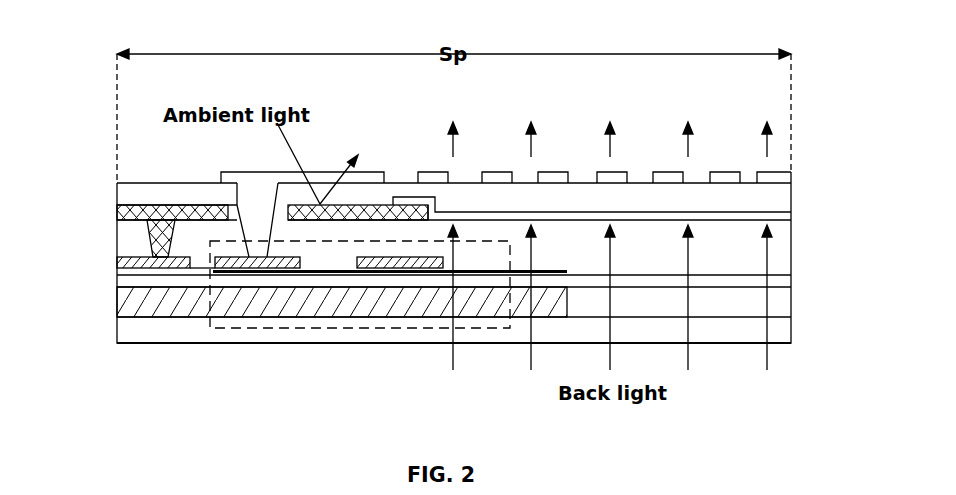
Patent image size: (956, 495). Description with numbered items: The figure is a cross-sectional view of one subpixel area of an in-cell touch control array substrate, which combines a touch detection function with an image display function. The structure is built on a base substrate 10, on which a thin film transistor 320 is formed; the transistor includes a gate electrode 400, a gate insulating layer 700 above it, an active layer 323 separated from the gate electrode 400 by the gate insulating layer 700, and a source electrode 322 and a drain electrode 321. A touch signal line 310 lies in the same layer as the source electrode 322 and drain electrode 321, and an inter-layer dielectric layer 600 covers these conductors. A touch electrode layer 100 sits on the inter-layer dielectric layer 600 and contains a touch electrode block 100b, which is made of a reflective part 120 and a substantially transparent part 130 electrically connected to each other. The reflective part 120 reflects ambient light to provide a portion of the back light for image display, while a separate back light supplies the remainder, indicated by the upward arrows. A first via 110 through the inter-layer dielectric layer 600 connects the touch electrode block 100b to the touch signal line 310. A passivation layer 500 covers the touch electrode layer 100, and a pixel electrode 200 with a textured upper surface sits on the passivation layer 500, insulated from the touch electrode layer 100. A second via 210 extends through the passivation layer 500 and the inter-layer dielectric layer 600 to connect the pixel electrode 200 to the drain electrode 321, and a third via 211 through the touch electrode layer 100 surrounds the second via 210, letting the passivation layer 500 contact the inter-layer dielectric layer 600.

The base substrate 10 is at (777, 336).
The touch electrode layer 100 is at (778, 217).
The touch electrode blocks 100b is at (425, 101).
The first vias 110 is at (157, 234).
The reflective part 120 is at (317, 203).
The substantially transparent part 130 is at (470, 213).
The pixel electrode 200 is at (778, 177).
The second vias 210 is at (248, 205).
The third via 211 is at (282, 212).
The touch signal lines 310 is at (122, 266).
The thin film transistors 320 is at (510, 260).
The drain electrode 321 is at (258, 262).
The source electrode 322 is at (410, 268).
The active layer 323 is at (305, 273).
The gate electrode 400 is at (342, 302).
The passivation layer 500 is at (778, 197).
The inter-layer dielectric layer 600 is at (778, 263).
The gate insulating layer 700 is at (778, 287).